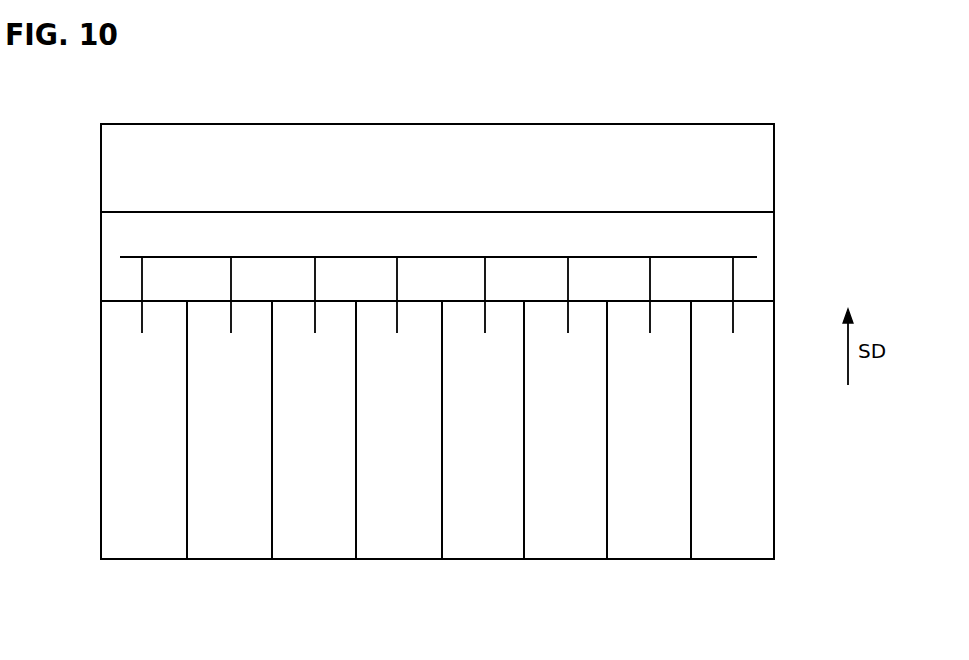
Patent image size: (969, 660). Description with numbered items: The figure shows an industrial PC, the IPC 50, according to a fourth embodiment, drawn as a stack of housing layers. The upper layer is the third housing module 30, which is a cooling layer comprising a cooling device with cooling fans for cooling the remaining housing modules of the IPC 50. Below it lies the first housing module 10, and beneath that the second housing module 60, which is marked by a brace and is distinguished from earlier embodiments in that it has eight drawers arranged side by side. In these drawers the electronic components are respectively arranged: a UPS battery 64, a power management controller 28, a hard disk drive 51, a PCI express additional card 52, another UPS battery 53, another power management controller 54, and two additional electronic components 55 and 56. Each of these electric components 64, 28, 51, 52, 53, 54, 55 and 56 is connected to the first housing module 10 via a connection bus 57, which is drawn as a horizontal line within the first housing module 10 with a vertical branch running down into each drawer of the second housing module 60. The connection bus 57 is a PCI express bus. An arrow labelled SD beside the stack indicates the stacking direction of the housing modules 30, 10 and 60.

The IPC 50 is at (872, 183).
The third housing module 30 is at (774, 165).
The first housing module 10 is at (774, 237).
The connection bus 57 is at (128, 255).
The second housing module 60 is at (90, 301).
The UPS battery 64 is at (142, 547).
The power management controller 28 is at (228, 547).
The hard disk drive 51 is at (311, 547).
The PCI express additional card 52 is at (391, 547).
The another UPS battery 53 is at (478, 547).
The another power management controller 54 is at (560, 547).
The additional electronic component 55 is at (643, 547).
The additional electronic component 56 is at (727, 547).